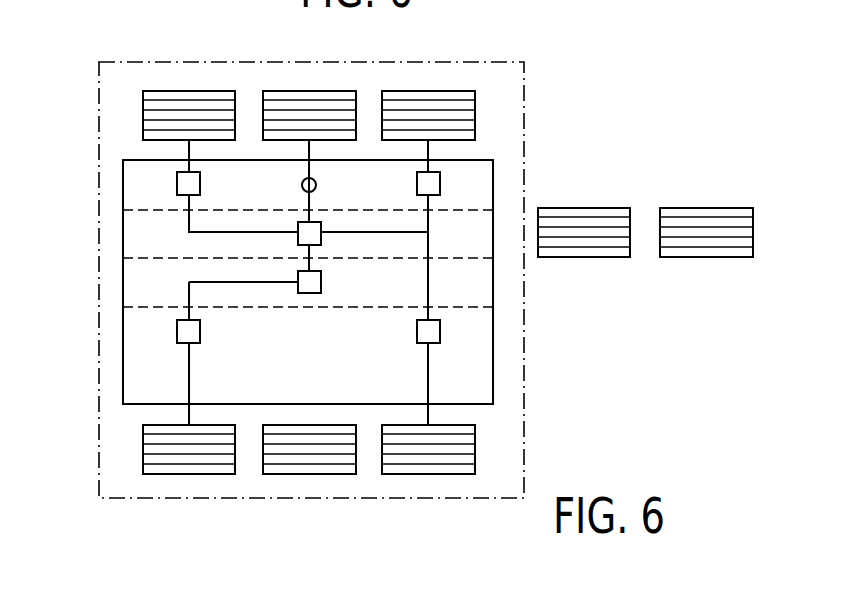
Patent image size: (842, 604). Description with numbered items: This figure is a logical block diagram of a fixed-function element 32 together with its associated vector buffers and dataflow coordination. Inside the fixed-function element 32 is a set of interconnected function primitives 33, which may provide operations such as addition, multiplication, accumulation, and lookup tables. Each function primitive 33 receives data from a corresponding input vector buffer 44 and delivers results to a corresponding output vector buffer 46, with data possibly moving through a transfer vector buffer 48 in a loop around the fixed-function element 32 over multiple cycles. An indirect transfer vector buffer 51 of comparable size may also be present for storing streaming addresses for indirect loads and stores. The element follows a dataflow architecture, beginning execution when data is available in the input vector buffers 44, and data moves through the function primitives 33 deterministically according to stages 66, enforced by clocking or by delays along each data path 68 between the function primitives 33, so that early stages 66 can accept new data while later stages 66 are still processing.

The fixed-function element 32 is at (99, 115).
The function primitives 33 is at (297, 277).
The input vector buffers 44 is at (301, 91).
The output vector buffers 46 is at (301, 474).
The transfer vector buffer 48 is at (583, 257).
The indirect transfer vector buffer 51 is at (706, 208).
The stages 66 is at (473, 285).
The data path 68 is at (187, 300).